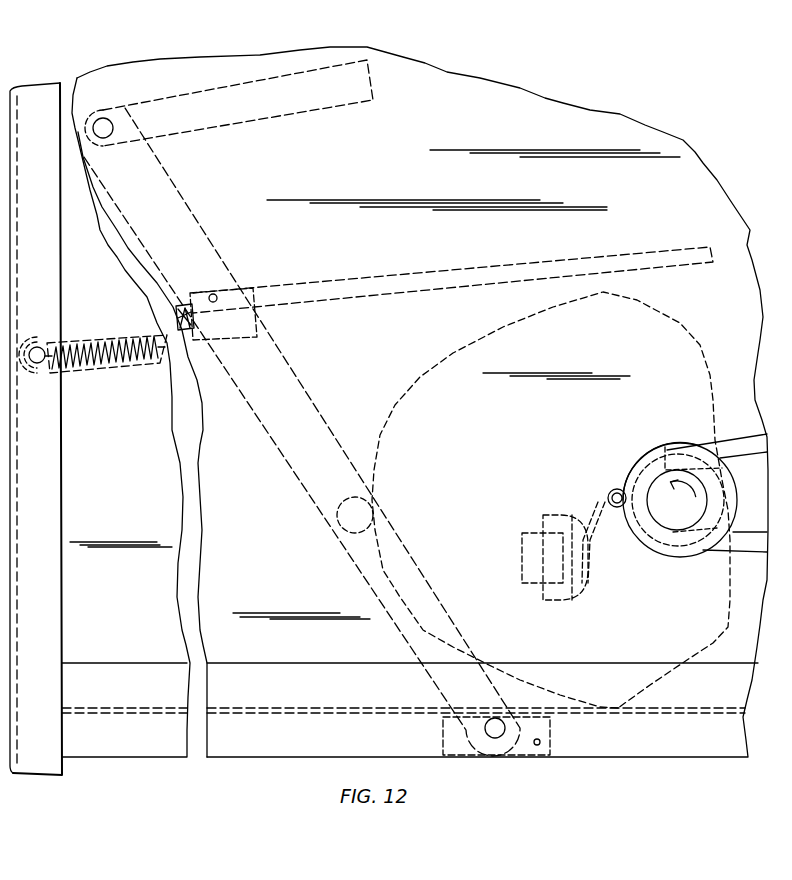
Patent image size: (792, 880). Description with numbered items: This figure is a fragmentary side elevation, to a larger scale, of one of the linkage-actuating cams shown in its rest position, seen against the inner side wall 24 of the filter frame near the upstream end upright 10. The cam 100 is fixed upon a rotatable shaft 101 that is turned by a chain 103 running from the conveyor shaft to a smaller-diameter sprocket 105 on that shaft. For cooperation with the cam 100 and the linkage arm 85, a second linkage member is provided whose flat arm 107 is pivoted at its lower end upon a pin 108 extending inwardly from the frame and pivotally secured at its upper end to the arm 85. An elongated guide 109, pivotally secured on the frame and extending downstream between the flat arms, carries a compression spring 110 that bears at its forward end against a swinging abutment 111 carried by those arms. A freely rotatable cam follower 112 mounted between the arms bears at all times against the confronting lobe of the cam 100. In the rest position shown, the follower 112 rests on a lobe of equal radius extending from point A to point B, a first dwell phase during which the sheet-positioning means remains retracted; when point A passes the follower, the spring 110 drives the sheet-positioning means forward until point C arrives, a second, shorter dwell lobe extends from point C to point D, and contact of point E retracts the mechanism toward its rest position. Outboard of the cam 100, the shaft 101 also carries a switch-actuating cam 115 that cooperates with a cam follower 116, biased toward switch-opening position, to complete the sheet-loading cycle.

The upstream end upright 10 is at (52, 470).
The inner side wall 24 is at (505, 96).
The linkage arm 85 is at (340, 95).
The cam 100 is at (613, 353).
The rotatable shaft 101 is at (683, 520).
The chain 103 is at (740, 449).
The sprocket 105 is at (667, 447).
The flat arm 107 is at (290, 382).
The pin 108 is at (502, 737).
The elongated guide 109 is at (457, 281).
The compression spring 110 is at (132, 360).
The swinging abutment 111 is at (253, 292).
The cam follower 112 is at (347, 525).
The switch-actuating cam 115 is at (632, 465).
The cam follower 116 is at (610, 495).
The cam point A is at (393, 603).
The cam point B is at (380, 436).
The cam point C is at (723, 476).
The cam point D is at (736, 499).
The cam point E is at (618, 708).